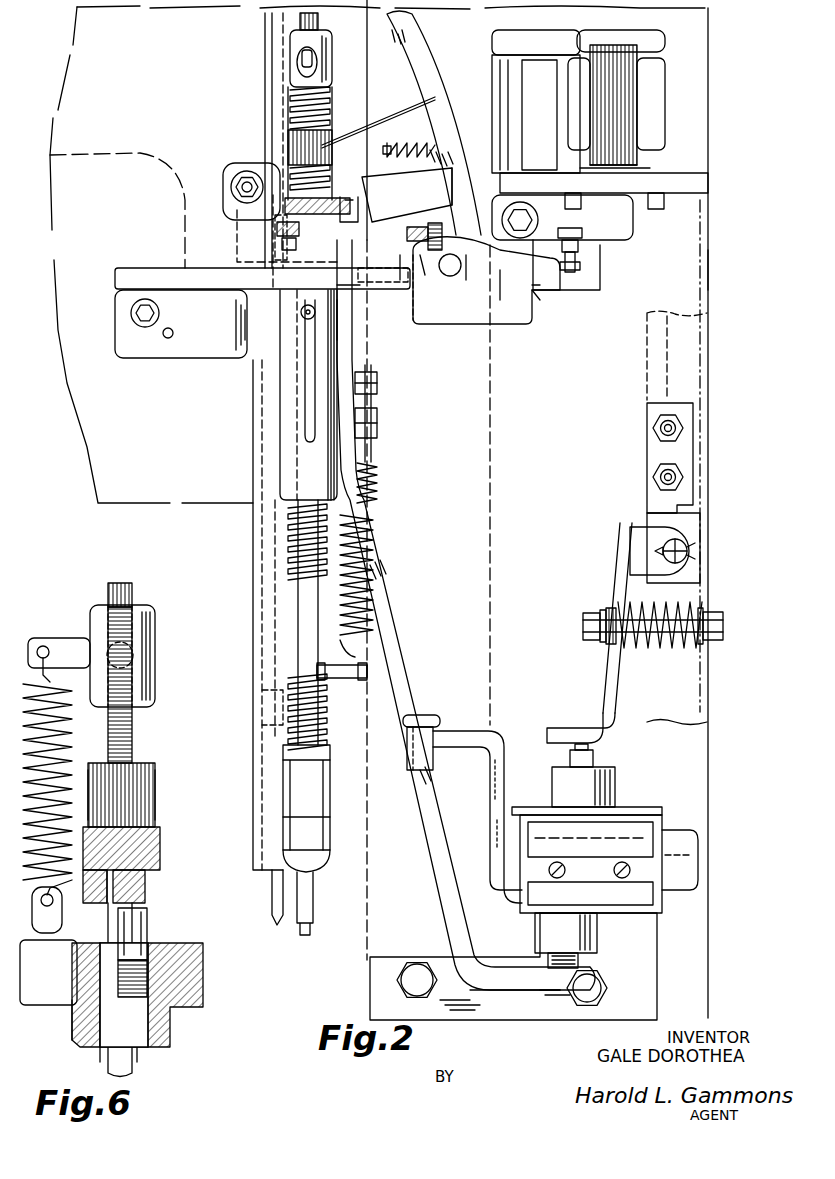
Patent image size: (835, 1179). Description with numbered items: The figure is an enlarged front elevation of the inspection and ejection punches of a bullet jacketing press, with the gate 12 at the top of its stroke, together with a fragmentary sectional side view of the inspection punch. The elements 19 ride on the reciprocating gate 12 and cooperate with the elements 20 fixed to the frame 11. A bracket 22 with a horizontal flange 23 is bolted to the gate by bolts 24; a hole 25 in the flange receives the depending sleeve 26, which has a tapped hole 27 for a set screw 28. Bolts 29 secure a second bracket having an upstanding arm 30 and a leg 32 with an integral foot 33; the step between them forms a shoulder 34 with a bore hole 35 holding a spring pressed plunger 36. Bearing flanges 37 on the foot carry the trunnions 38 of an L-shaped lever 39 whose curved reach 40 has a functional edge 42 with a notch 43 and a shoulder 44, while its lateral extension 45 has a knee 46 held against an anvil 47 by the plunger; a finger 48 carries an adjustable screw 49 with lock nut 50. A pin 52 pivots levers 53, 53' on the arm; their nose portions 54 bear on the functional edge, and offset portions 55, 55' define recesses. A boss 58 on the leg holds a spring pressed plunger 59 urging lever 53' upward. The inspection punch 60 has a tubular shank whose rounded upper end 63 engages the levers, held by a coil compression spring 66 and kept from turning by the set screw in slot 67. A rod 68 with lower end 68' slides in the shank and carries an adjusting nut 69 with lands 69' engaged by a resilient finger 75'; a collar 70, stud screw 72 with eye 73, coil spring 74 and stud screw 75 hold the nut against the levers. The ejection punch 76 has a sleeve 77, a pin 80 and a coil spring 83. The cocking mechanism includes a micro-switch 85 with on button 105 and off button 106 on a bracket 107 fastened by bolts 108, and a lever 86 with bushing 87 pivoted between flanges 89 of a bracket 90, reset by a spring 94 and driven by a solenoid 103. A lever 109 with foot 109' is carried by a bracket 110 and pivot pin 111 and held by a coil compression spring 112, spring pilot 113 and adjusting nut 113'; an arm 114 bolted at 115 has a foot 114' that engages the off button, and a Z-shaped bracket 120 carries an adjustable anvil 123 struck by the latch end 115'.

In FIG. 2, the frame 11 is at (690, 275).
In FIG. 2, the gate 12 is at (57, 340).
In FIG. 2, the inspection and ejection mechanism elements 19 is at (213, 398).
In FIG. 2, the fixed mechanism elements 20 is at (695, 113).
In FIG. 2, the bracket 22 is at (127, 350).
In FIG. 2, the flange 23 is at (118, 275).
In FIG. 2, the bolts 24 is at (137, 317).
In FIG. 2, the hole 25 is at (346, 320).
In FIG. 2, the sleeve 26 is at (285, 398).
In FIG. 6, the sleeve 26 is at (80, 1030).
In FIG. 2, the tapped hole 27 is at (300, 311).
In FIG. 2, the set screw 28 is at (306, 316).
In FIG. 2, the bolts 29 is at (352, 190).
In FIG. 2, the upstanding arm 30 is at (228, 222).
In FIG. 2, the leg 32 is at (378, 282).
In FIG. 6, the leg 32 is at (190, 960).
In FIG. 2, the foot 33 is at (432, 318).
In FIG. 2, the shoulder 34 is at (415, 262).
In FIG. 2, the bore hole 35 is at (403, 278).
In FIG. 2, the spring pressed plunger 36 is at (422, 265).
In FIG. 2, the bearing flanges 37 is at (467, 272).
In FIG. 2, the trunnions 38 is at (450, 277).
In FIG. 2, the lever 39 is at (500, 290).
In FIG. 2, the reach 40 is at (427, 66).
In FIG. 2, the functional edge 42 is at (424, 90).
In FIG. 2, the notch 43 is at (462, 192).
In FIG. 2, the shoulder 44 is at (446, 216).
In FIG. 2, the lateral extension 45 is at (532, 262).
In FIG. 2, the knee 46 is at (535, 285).
In FIG. 2, the anvil 47 is at (535, 292).
In FIG. 2, the finger 48 is at (582, 262).
In FIG. 2, the adjustable screw 49 is at (580, 278).
In FIG. 2, the lock nut 50 is at (585, 240).
In FIG. 2, the pin or bolt 52 is at (232, 178).
In FIG. 2, the lever 53 is at (281, 193).
In FIG. 2, the nose portion 54 is at (407, 195).
In FIG. 2, the offset portion 55 is at (322, 160).
In FIG. 6, the offset portion 55 is at (86, 890).
In FIG. 6, the boss 58 is at (150, 928).
In FIG. 2, the spring pressed plunger 59 is at (277, 228).
In FIG. 6, the spring pressed plunger 59 is at (147, 917).
In FIG. 2, the punch 60 is at (280, 613).
In FIG. 2, the rounded upper end 63 is at (237, 208).
In FIG. 6, the rounded upper end 63 is at (100, 912).
In FIG. 2, the coil compression spring 66 is at (323, 703).
In FIG. 2, the longitudinal slot 67 is at (295, 438).
In FIG. 6, the rod 68 is at (138, 832).
In FIG. 2, the adjusting nut 69 is at (322, 143).
In FIG. 6, the adjusting nut 69 is at (132, 717).
In FIG. 2, the collar 70 is at (322, 36).
In FIG. 6, the collar 70 is at (155, 643).
In FIG. 6, the stud screw 72 is at (64, 648).
In FIG. 6, the eye 73 is at (43, 646).
In FIG. 6, the coil spring 74 is at (63, 735).
In FIG. 6, the stud screw 75 is at (43, 942).
In FIG. 2, the ejection punch 76 is at (250, 542).
In FIG. 2, the sleeve 77 is at (254, 672).
In FIG. 2, the pin 80 is at (338, 662).
In FIG. 2, the coil spring 83 is at (378, 488).
In FIG. 2, the micro-switch 85 is at (627, 804).
In FIG. 2, the lever 86 is at (403, 120).
In FIG. 2, the bushing 87 is at (538, 95).
In FIG. 2, the flanges 89 is at (508, 40).
In FIG. 2, the bracket 90 is at (590, 38).
In FIG. 2, the spring 94 is at (431, 144).
In FIG. 2, the solenoid 103 is at (660, 88).
In FIG. 2, the on button 105 is at (598, 755).
In FIG. 2, the off button 106 is at (556, 968).
In FIG. 2, the bracket 107 is at (647, 970).
In FIG. 2, the bolts 108 is at (420, 995).
In FIG. 2, the lever 109 is at (592, 618).
In FIG. 2, the bracket 110 is at (678, 500).
In FIG. 2, the pivot pin 111 is at (681, 548).
In FIG. 2, the coil compression spring 112 is at (689, 612).
In FIG. 2, the spring pilot 113 is at (718, 640).
In FIG. 2, the arm 114 is at (466, 615).
In FIG. 2, the bolt 115 is at (403, 413).
In FIG. 2, the Z-shaped bracket 120 is at (492, 752).
In FIG. 2, the adjustable anvil 123 is at (425, 717).
In FIG. 2, the resilient finger 75' is at (254, 151).
In FIG. 2, the rear end of latch 115' is at (412, 224).
In FIG. 6, the vertical lands 69' is at (143, 788).
In FIG. 6, the offset portion 55' is at (139, 846).
In FIG. 6, the lever 53' is at (146, 886).
In FIG. 2, the lower end of rod 68' is at (304, 855).
In FIG. 2, the foot 109' is at (577, 723).
In FIG. 2, the foot 114' is at (515, 1021).
In FIG. 2, the spring compression adjusting nut 113' is at (597, 614).